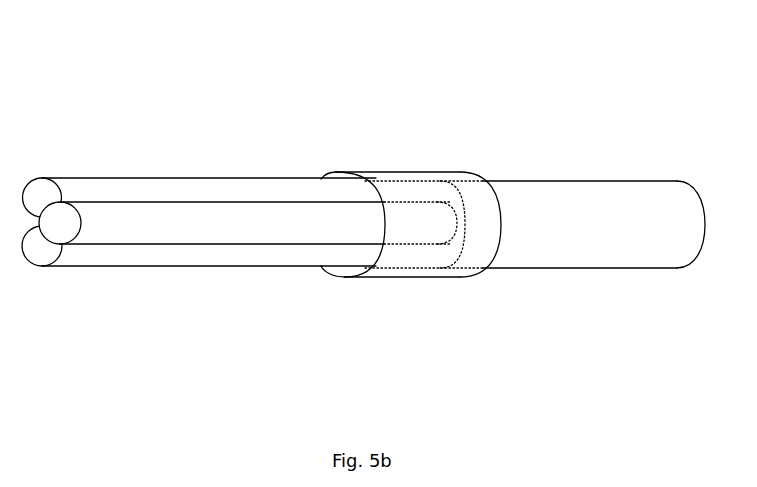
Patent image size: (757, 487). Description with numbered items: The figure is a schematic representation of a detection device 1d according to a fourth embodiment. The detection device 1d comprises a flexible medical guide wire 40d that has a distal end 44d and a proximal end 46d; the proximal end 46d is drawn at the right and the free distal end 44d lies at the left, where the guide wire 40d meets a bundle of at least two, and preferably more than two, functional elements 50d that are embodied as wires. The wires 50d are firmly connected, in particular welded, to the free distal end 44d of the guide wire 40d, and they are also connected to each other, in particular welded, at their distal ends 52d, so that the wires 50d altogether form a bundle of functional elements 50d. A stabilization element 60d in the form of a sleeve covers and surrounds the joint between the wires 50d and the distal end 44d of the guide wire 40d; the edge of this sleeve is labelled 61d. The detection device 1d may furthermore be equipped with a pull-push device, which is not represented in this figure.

The detection device 1d is at (382, 102).
The flexible medical guide wire 40d is at (548, 190).
The distal end 44d is at (457, 243).
The proximal end 46d is at (712, 230).
The functional elements 50d is at (202, 270).
The distal ends 52d is at (62, 270).
The stabilization element 60d is at (421, 170).
The end of sleeve 61d is at (458, 279).